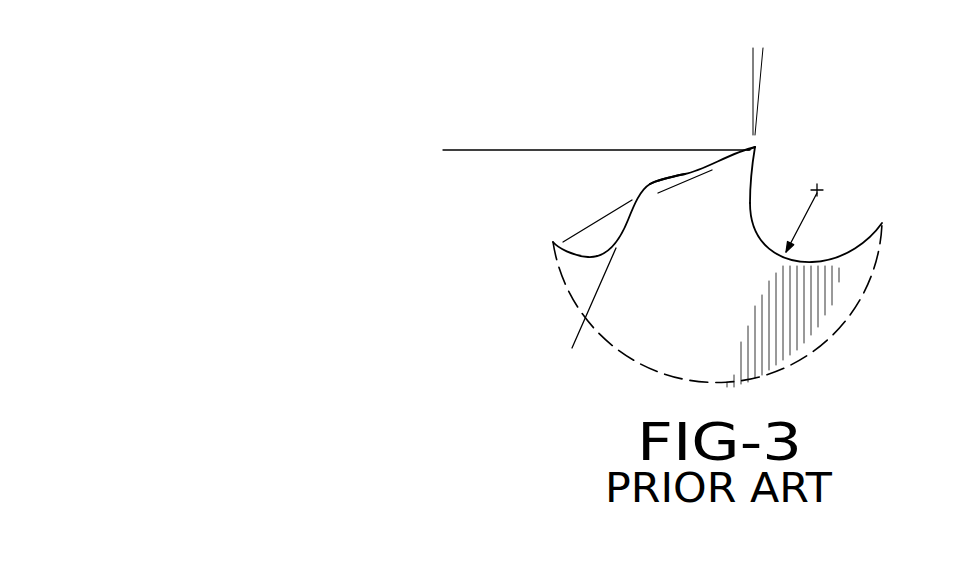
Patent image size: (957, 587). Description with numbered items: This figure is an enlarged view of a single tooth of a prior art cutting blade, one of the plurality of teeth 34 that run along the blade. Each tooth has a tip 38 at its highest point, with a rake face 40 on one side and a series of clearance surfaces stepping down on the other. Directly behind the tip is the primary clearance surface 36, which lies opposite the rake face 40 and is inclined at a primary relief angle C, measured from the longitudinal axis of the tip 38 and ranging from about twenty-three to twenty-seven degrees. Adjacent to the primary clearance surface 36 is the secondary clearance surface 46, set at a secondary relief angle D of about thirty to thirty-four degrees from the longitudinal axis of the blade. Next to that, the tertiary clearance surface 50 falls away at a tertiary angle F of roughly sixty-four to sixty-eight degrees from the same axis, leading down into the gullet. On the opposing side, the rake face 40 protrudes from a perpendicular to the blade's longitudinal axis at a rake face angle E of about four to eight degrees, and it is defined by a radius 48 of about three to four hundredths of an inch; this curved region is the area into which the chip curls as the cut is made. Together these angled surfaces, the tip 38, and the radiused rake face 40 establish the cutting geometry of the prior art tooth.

The plurality of teeth 34 is at (840, 262).
The primary clearance surface 36 is at (737, 158).
The tip 38 is at (755, 147).
The rake face 40 is at (750, 203).
The secondary clearance surface 46 is at (650, 184).
The radius 48 is at (803, 217).
The tertiary clearance surface 50 is at (630, 222).
The primary relief angle C is at (675, 100).
The secondary relief angle D is at (553, 152).
The rake face angle E is at (813, 80).
The tertiary angle F is at (570, 330).